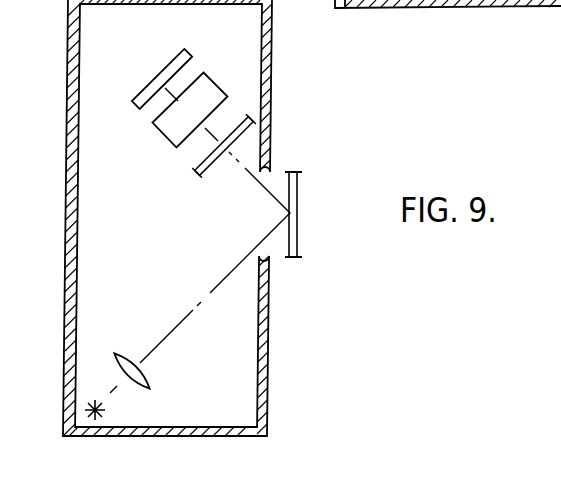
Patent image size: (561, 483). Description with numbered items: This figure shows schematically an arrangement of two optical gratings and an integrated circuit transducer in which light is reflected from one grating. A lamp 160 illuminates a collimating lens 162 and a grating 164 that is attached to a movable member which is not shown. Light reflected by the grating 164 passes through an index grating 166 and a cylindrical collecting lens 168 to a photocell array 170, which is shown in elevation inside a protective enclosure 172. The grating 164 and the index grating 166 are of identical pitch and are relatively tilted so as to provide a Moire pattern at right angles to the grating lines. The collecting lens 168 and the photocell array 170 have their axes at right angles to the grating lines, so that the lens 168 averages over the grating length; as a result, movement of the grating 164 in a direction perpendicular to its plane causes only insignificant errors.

The lamp 160 is at (90, 403).
The collimating lens 162 is at (146, 376).
The grating 164 is at (297, 208).
The index grating 166 is at (198, 172).
The cylindrical collecting lens 168 is at (212, 88).
The photocell array 170 is at (163, 77).
The protective enclosure 172 is at (268, 353).